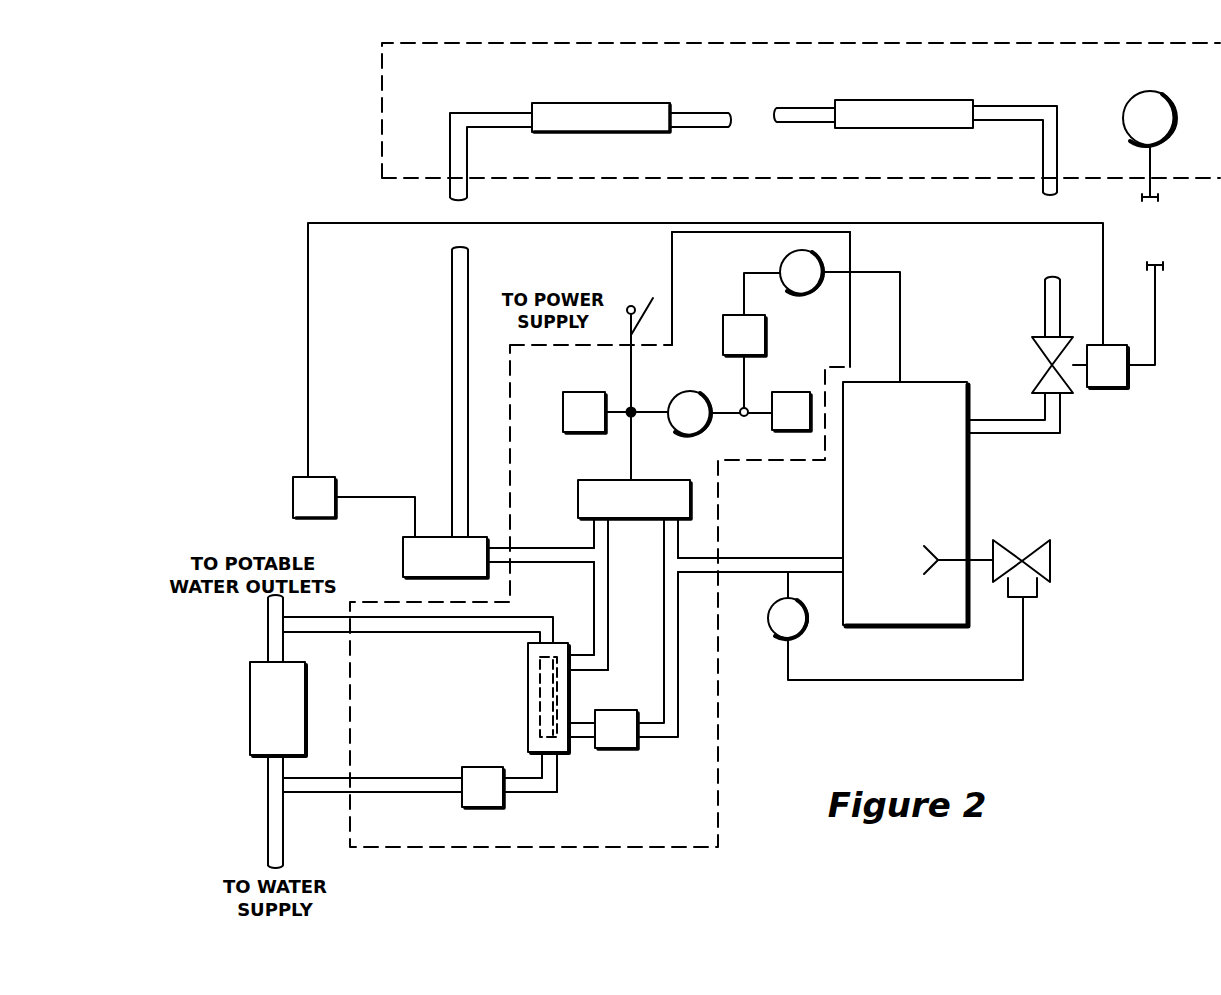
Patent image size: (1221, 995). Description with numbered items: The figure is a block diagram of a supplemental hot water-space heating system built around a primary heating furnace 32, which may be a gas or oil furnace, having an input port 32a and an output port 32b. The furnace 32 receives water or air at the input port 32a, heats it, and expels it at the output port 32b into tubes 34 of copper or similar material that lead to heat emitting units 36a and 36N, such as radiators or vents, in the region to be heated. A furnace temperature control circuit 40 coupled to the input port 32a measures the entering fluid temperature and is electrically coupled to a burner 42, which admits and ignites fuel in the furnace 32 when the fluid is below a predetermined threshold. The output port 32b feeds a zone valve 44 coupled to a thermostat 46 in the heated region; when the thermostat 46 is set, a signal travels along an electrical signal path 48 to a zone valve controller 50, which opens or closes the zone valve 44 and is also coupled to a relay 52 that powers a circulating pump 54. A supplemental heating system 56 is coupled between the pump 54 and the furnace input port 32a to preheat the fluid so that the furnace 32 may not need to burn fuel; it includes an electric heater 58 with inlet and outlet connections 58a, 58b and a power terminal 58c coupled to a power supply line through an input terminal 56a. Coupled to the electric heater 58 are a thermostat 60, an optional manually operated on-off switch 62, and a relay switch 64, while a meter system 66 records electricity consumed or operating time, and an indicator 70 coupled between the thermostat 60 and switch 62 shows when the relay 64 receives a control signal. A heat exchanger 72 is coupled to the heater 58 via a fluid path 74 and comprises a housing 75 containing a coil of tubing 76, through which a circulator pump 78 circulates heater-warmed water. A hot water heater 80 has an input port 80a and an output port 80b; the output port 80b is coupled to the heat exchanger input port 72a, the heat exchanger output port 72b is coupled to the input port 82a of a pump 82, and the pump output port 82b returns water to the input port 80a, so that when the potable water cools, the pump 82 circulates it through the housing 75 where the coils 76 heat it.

The primary heating furnace 32 is at (928, 380).
The input port 32a is at (812, 556).
The output port 32b is at (990, 437).
The tubes 34 is at (506, 110).
The heat emitting unit 36N is at (575, 103).
The heat emitting unit 36a is at (878, 100).
The furnace temperature control circuit 40 is at (773, 633).
The burner 42 is at (1038, 545).
The zone valve 44 is at (1036, 351).
The thermostat 46 is at (1152, 90).
The electrical signal path 48 is at (1154, 159).
The zone valve controller 50 is at (332, 189).
The relay 52 is at (323, 477).
The circulating pump 54 is at (403, 553).
The supplemental heating system 56 is at (852, 260).
The supplemental heating system input terminal 56a is at (640, 379).
The electric heater 58 is at (578, 500).
The heater inlet conduit 58a is at (594, 535).
The heater outlet conduit 58b is at (660, 551).
The power terminal 58c is at (631, 463).
The thermostat 60 is at (685, 392).
The manually operated on-off switch 62 is at (734, 315).
The relay switch 64 is at (811, 288).
The meter system 66 is at (563, 405).
The indicator 70 is at (793, 388).
The heat exchanger 72 is at (506, 656).
The input port 72a is at (556, 624).
The output port 72b is at (557, 762).
The fluid path 74 is at (607, 645).
The housing 75 is at (528, 694).
The coil of tubing 76 is at (540, 712).
The circulator pump 78 is at (614, 752).
The hot water heater 80 is at (289, 720).
The input port 80a is at (270, 772).
The output port 80b is at (268, 648).
The pump 82 is at (480, 808).
The input port 82a is at (545, 796).
The output port 82b is at (433, 798).